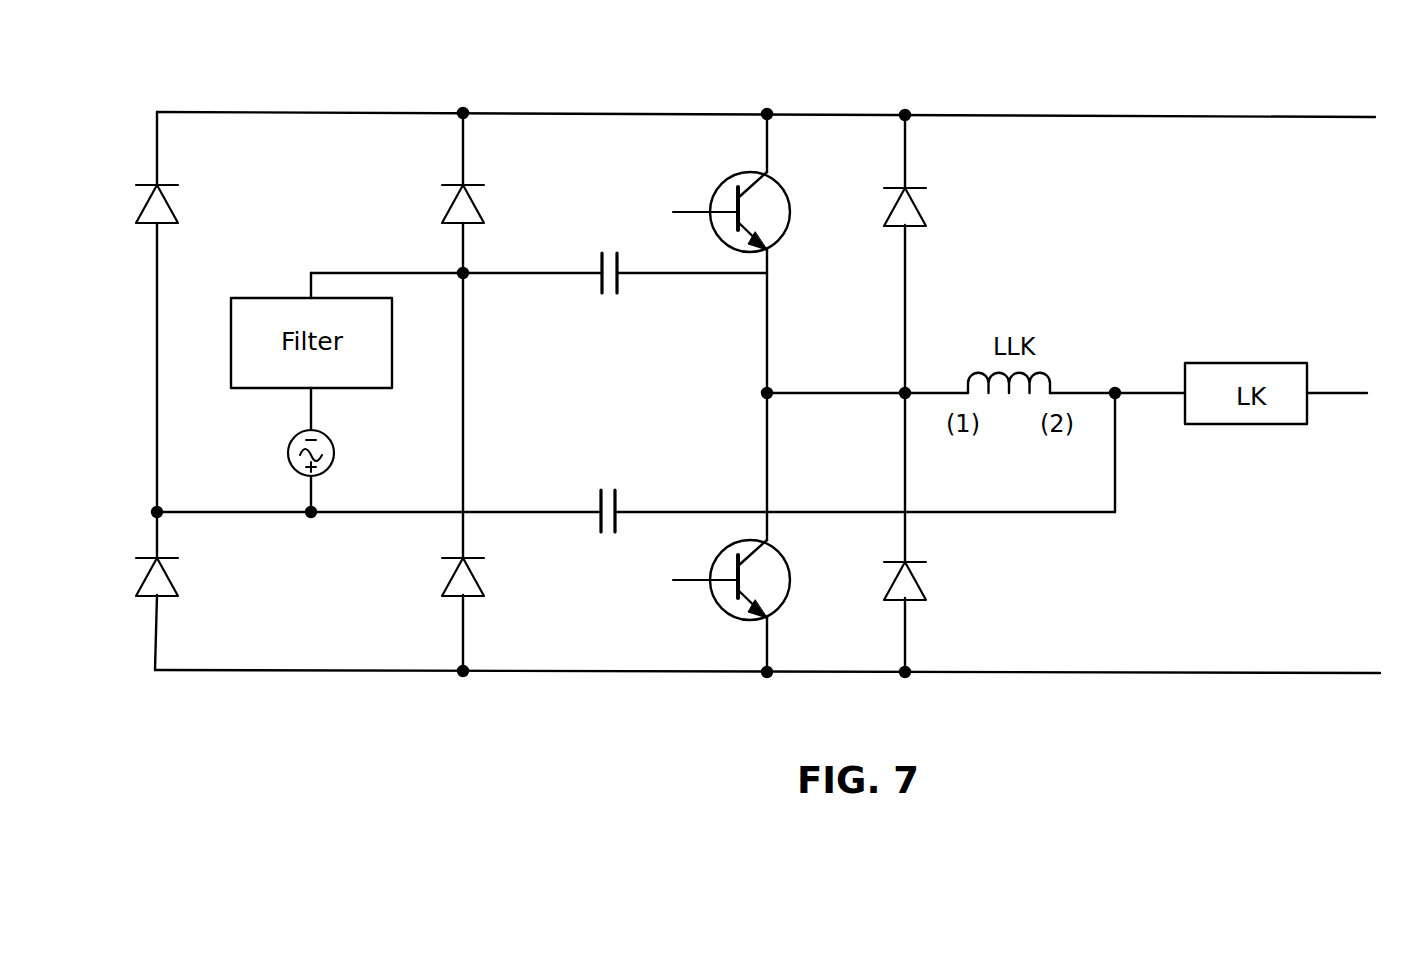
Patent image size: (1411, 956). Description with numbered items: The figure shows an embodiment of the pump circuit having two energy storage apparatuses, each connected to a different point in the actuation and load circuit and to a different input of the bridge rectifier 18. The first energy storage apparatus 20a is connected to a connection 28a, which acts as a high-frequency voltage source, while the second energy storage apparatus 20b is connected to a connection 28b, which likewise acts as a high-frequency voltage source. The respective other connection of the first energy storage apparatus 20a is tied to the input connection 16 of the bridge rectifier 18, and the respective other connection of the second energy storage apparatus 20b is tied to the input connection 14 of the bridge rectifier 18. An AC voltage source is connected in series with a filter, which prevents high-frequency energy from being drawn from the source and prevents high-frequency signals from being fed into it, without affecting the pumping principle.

The bridge rectifier 18 is at (766, 96).
The input connection 16 is at (456, 289).
The input connection 14 is at (376, 496).
The first energy storage apparatus 20a is at (614, 289).
The second energy storage apparatus 20b is at (614, 529).
The connection 28a is at (839, 393).
The connection 28b is at (1117, 381).